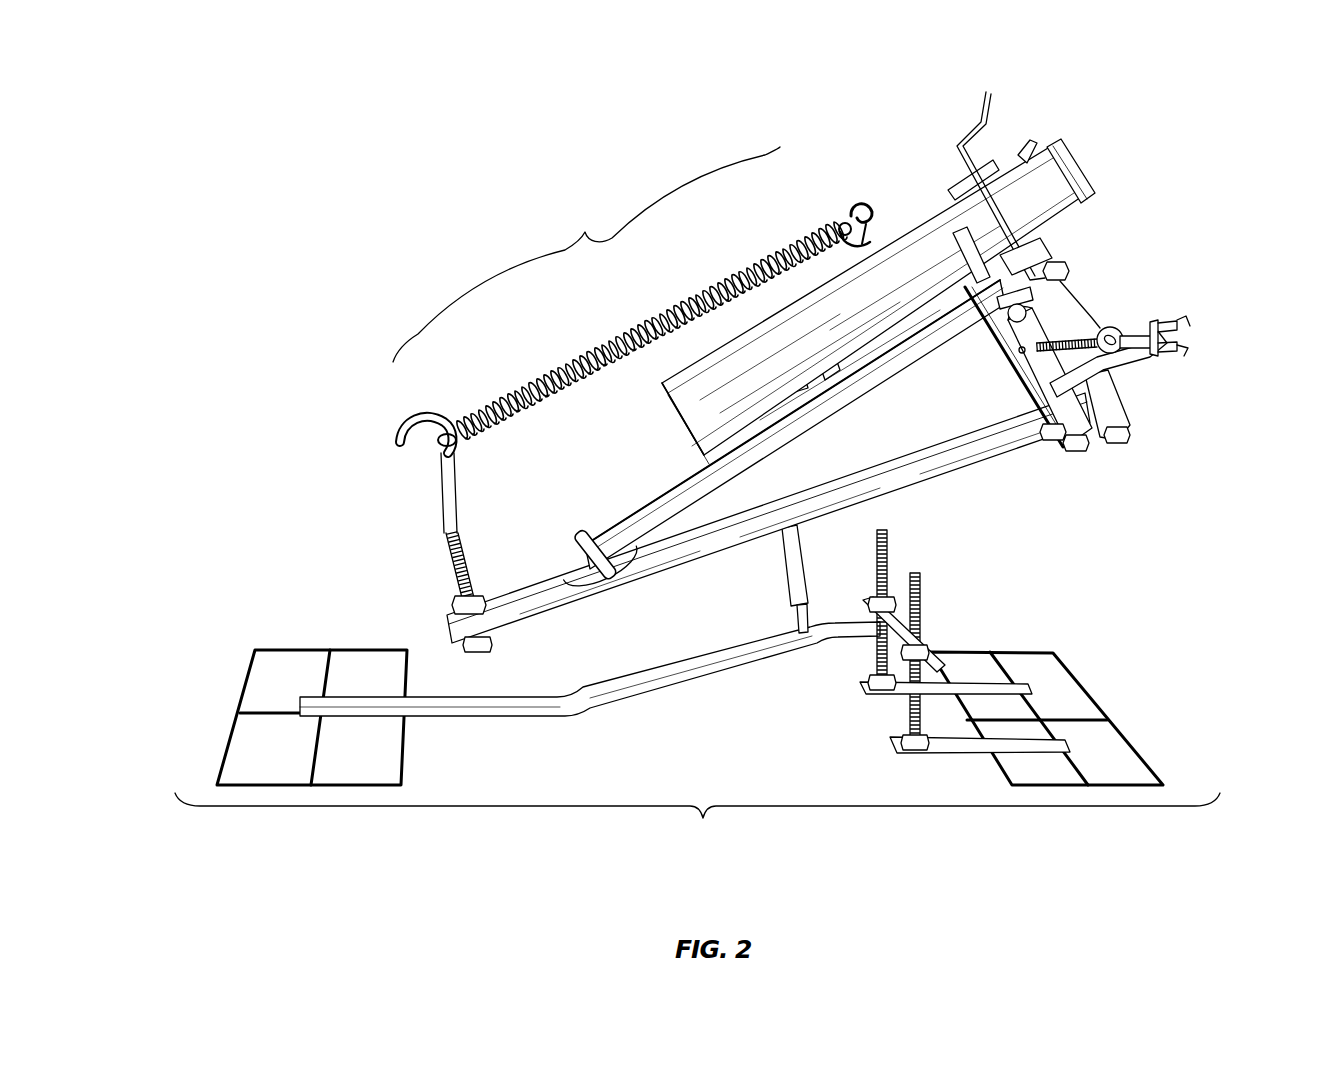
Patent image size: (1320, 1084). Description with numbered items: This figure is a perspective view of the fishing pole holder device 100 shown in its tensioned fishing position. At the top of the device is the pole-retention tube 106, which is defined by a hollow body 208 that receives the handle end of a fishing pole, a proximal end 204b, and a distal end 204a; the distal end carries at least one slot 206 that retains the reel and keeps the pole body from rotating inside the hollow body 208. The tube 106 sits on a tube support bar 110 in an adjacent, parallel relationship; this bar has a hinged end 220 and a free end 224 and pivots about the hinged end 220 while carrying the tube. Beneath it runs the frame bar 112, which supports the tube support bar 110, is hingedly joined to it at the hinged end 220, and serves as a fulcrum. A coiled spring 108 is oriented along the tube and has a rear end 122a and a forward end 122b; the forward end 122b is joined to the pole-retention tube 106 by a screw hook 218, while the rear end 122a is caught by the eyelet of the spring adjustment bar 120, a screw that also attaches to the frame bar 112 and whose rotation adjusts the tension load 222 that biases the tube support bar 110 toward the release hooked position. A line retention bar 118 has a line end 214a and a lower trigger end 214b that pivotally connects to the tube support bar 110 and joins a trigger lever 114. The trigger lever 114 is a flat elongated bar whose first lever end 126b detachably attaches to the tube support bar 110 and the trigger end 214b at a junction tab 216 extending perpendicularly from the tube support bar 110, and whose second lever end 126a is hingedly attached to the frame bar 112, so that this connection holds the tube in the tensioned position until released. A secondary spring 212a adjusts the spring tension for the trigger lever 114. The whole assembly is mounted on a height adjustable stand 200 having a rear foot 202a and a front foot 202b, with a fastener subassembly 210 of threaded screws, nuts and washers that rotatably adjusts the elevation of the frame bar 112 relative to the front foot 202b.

The holder device 100 is at (244, 82).
The pole-retention tube 106 is at (658, 396).
The spring 108 is at (587, 228).
The tube support bar 110 is at (757, 433).
The frame bar 112 is at (935, 478).
The trigger lever 114 is at (1080, 399).
The line retention bar 118 is at (962, 142).
The spring adjustment bar 120 is at (437, 486).
The rear end 122a is at (458, 428).
The forward end 122b is at (836, 226).
The second lever end 126a is at (1065, 456).
The first lever end 126b is at (980, 292).
The height adjustable stand 200 is at (696, 693).
The rear foot 202a is at (250, 672).
The front foot 202b is at (1140, 752).
The distal end 204a is at (690, 410).
The proximal end 204b is at (1075, 127).
The slot 206 is at (985, 160).
The hollow body 208 is at (925, 210).
The fastener subassembly 210 is at (912, 702).
The secondary spring 212a is at (1057, 347).
The line end 214a is at (994, 79).
The trigger end 214b is at (1070, 272).
The junction tab 216 is at (1010, 325).
The screw hook 218 is at (858, 212).
The hinged end 220 is at (630, 518).
The tension load 222 is at (621, 299).
The free end 224 is at (1040, 248).